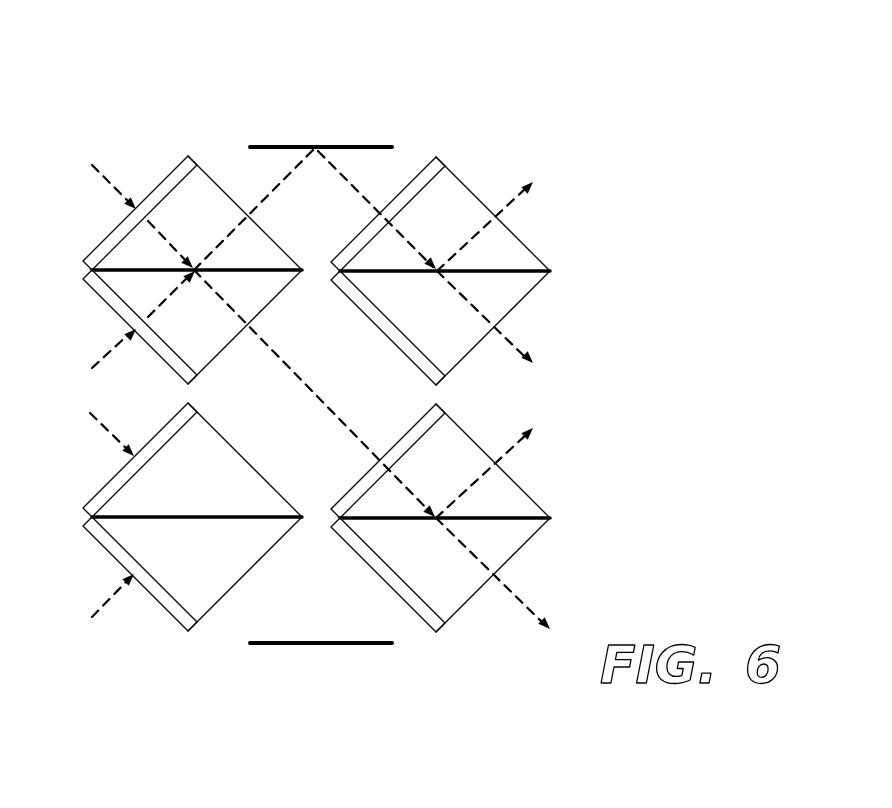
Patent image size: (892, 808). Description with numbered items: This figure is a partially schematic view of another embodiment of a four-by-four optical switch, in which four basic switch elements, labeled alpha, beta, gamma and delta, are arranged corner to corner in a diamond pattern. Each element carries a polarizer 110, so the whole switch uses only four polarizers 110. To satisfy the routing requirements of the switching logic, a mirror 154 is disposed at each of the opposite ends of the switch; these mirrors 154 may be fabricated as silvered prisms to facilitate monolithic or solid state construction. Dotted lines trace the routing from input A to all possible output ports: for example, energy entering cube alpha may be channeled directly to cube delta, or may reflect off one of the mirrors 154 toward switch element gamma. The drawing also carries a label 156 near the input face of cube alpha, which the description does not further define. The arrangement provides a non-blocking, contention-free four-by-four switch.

The polarizer 110 is at (340, 366).
The mirror 154 is at (362, 146).
The wave plate 156 is at (105, 181).